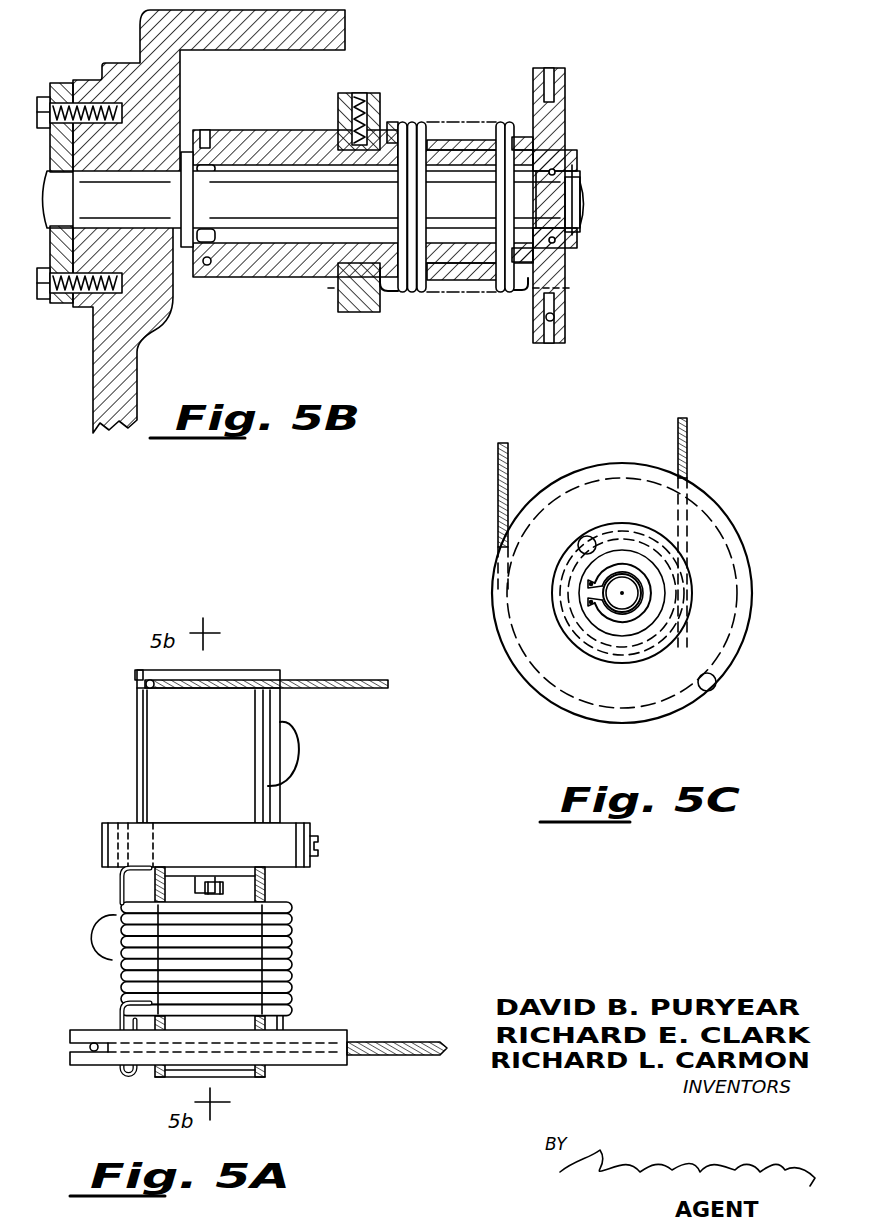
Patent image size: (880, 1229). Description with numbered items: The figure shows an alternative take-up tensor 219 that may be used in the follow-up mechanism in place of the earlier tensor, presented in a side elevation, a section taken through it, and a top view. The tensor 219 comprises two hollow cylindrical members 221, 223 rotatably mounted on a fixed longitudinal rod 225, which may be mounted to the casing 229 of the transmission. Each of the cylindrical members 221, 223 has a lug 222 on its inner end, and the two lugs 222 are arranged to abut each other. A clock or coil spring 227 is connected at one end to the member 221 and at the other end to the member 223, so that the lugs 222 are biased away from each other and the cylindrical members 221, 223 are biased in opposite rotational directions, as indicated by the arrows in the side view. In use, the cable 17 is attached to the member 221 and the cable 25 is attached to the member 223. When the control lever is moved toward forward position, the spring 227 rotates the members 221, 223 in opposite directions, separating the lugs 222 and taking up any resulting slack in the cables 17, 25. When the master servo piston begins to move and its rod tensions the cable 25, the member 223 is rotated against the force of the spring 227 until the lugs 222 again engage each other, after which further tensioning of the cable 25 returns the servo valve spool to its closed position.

In FIG. 5B, the cable 17 is at (205, 267).
In FIG. 5C, the cable 17 is at (688, 442).
In FIG. 5A, the cable 17 is at (305, 680).
In FIG. 5B, the cable 25 is at (555, 317).
In FIG. 5C, the cable 25 is at (498, 506).
In FIG. 5A, the cable 25 is at (362, 1040).
In FIG. 5B, the take up tensor 219 is at (310, 273).
In FIG. 5C, the take up tensor 219 is at (758, 604).
In FIG. 5A, the take up tensor 219 is at (130, 762).
In FIG. 5B, the hollow cylindrical member 221 is at (273, 262).
In FIG. 5A, the hollow cylindrical member 221 is at (155, 720).
In FIG. 5B, the lug 222 is at (403, 124).
In FIG. 5A, the lug 222 is at (222, 884).
In FIG. 5B, the hollow cylindrical member 223 is at (566, 113).
In FIG. 5A, the hollow cylindrical member 223 is at (180, 1028).
In FIG. 5B, the fixed longitudinal rod 225 is at (292, 216).
In FIG. 5B, the clock or coil spring 227 is at (497, 130).
In FIG. 5A, the clock or coil spring 227 is at (285, 956).
In FIG. 5B, the casing 229 is at (150, 48).